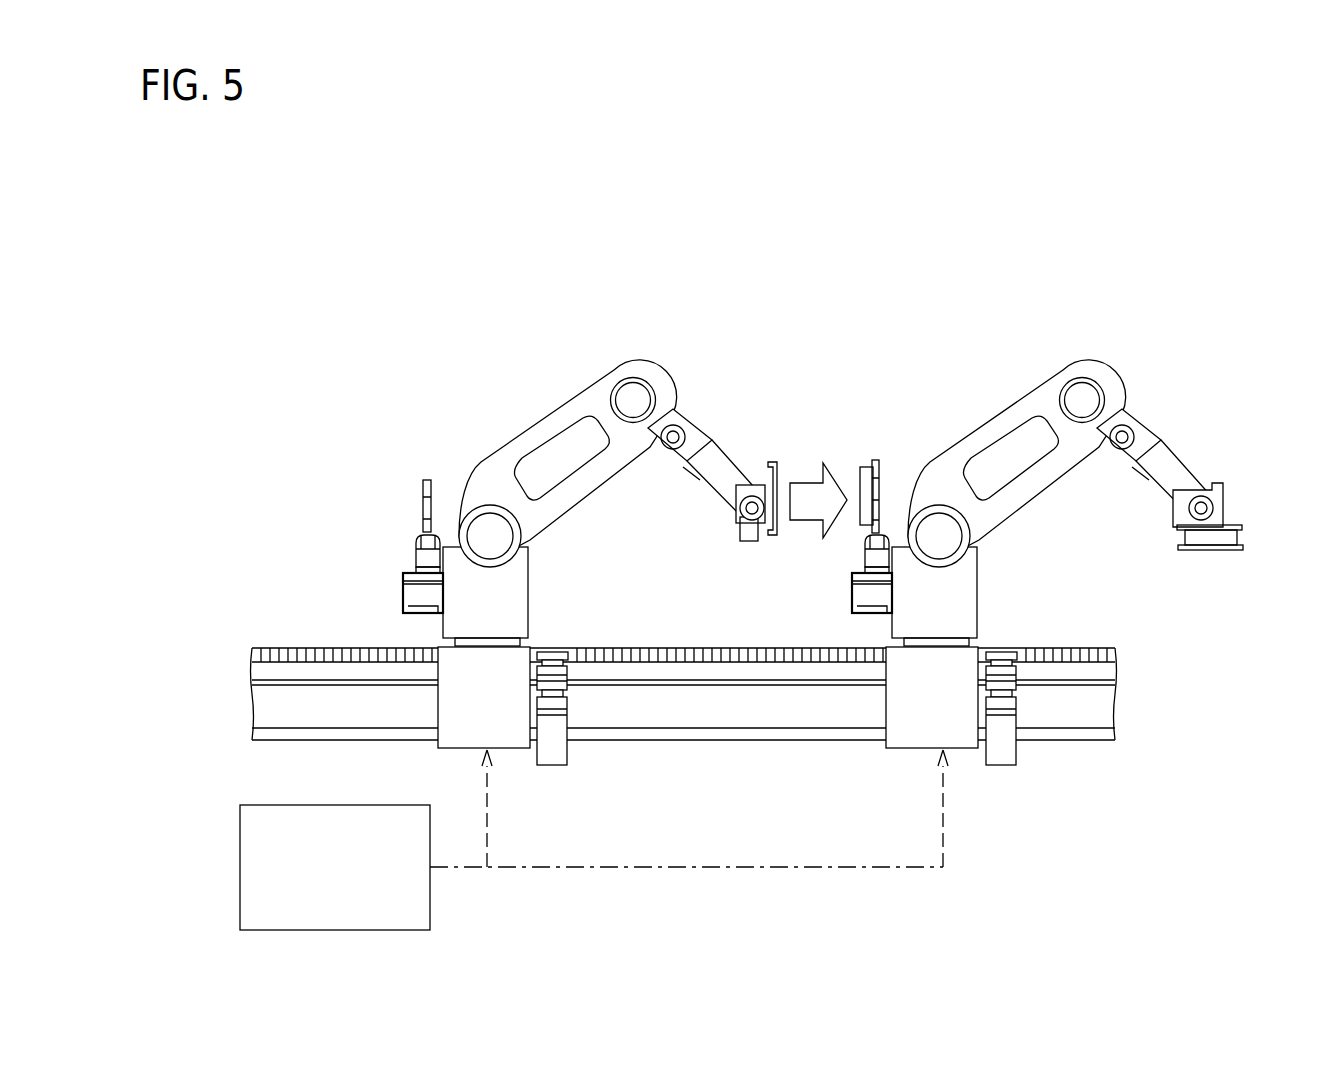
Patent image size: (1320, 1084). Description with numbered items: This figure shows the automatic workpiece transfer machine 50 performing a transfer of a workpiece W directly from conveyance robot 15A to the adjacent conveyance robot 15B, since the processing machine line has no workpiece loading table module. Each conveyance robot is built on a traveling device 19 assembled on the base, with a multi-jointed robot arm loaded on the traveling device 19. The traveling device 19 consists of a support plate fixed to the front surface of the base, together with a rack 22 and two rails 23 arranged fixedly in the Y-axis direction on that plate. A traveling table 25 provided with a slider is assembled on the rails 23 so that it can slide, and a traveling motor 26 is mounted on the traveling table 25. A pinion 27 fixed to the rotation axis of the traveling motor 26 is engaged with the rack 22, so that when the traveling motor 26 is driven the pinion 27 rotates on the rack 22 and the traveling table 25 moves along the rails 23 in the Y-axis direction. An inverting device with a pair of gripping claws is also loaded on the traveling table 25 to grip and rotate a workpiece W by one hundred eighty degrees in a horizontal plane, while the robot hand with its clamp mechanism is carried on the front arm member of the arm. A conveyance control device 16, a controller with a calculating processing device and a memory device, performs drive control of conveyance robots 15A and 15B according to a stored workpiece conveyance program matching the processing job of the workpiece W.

The automatic workpiece transfer machine 50 is at (810, 277).
The conveyance robot 15A is at (1015, 475).
The conveyance robot 15B is at (541, 473).
The conveyance control device 16 is at (278, 828).
The traveling device 19 is at (728, 759).
The rack 22 is at (1115, 652).
The rails 23 is at (1095, 735).
The traveling table 25 is at (463, 715).
The traveling motor 26 is at (795, 717).
The pinion 27 is at (553, 650).
The workpiece W is at (862, 490).